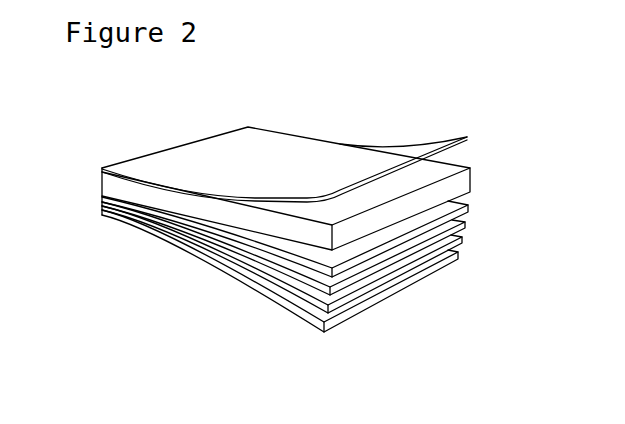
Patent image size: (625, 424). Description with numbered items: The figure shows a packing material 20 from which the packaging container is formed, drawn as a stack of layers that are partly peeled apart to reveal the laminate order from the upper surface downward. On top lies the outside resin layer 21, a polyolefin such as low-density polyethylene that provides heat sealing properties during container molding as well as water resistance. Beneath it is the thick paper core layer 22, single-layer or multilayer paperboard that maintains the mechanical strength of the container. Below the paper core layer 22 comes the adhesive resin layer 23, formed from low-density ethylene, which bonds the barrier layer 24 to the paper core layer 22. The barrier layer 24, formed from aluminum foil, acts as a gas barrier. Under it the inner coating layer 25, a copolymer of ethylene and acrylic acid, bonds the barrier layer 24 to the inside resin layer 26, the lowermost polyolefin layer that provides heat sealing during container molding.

The packing material 20 is at (508, 133).
The outside resin layer 21 is at (468, 138).
The paper core layer 22 is at (470, 178).
The adhesive resin layer 23 is at (468, 209).
The barrier layer 24 is at (465, 225).
The inner coating layer 25 is at (462, 240).
The inside resin layer 26 is at (458, 256).